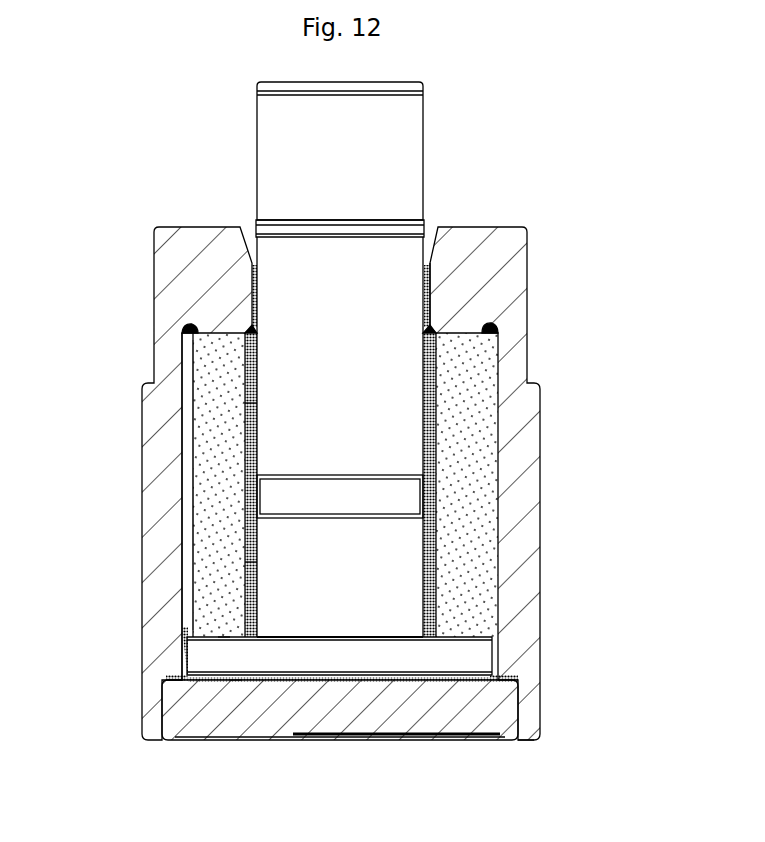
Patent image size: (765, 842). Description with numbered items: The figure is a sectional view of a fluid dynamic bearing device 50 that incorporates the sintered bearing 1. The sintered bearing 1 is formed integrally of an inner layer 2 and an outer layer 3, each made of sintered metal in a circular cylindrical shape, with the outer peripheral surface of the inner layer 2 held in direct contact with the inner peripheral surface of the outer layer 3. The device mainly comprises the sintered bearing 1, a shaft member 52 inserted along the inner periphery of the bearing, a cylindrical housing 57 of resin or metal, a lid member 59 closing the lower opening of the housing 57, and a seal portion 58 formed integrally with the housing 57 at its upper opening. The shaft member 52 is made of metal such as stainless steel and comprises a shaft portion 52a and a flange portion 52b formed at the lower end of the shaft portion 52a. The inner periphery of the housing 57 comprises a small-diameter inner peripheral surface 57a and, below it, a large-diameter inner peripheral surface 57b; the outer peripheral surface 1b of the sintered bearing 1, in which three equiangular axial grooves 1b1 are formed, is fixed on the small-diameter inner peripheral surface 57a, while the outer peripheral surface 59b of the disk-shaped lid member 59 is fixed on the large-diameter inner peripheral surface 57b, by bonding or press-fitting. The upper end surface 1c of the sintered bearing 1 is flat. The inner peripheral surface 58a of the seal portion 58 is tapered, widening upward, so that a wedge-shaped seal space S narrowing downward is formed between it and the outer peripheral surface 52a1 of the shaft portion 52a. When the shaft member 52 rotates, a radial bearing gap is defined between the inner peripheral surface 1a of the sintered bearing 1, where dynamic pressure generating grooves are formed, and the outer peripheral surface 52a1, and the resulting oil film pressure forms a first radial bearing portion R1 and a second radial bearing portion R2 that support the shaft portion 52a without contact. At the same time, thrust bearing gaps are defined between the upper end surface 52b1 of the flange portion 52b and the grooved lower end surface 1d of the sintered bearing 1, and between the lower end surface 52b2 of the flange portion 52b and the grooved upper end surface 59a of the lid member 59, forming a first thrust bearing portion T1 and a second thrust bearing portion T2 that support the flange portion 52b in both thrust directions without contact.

The fluid dynamic bearing device 50 is at (553, 193).
The housing 57 is at (151, 243).
The small-diameter inner peripheral surface 57a is at (490, 558).
The large-diameter inner peripheral surface 57b is at (518, 712).
The seal portion 58 is at (197, 243).
The inner peripheral surface of the seal portion 58a is at (432, 258).
The lid member 59 is at (450, 712).
The upper end surface of the lid member 59a is at (417, 680).
The outer peripheral surface of the lid member 59b is at (520, 708).
The shaft member 52 is at (410, 153).
The shaft portion 52a is at (283, 139).
The outer peripheral surface of the shaft portion 52a1 is at (437, 360).
The flange portion 52b is at (478, 657).
The upper end surface of the flange portion 52b1 is at (465, 636).
The lower end surface of the flange portion 52b2 is at (470, 678).
The inner layer 2 is at (437, 482).
The sintered bearing 1 is at (473, 410).
The inner peripheral surface of the sintered bearing 1a is at (423, 410).
The outer peripheral surface of the sintered bearing 1b is at (185, 440).
The axial grooves 1b1 is at (192, 487).
The upper end surface of the sintered bearing 1c is at (487, 319).
The lower end surface of the sintered bearing 1d is at (214, 640).
The outer layer 3 is at (470, 530).
The seal space S is at (251, 265).
The first radial bearing portion R1 is at (245, 402).
The second radial bearing portion R2 is at (245, 561).
The first thrust bearing portion T1 is at (223, 634).
The second thrust bearing portion T2 is at (236, 684).